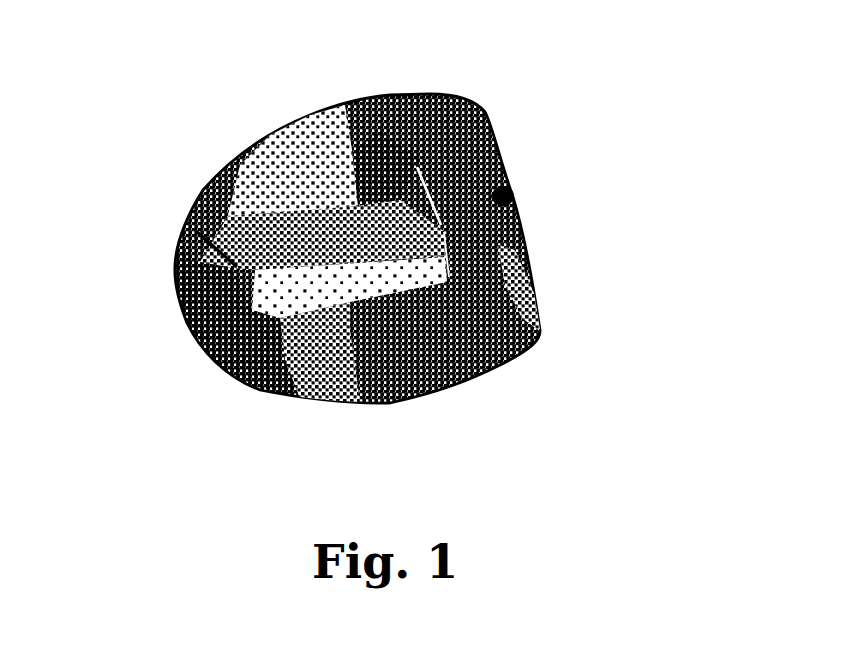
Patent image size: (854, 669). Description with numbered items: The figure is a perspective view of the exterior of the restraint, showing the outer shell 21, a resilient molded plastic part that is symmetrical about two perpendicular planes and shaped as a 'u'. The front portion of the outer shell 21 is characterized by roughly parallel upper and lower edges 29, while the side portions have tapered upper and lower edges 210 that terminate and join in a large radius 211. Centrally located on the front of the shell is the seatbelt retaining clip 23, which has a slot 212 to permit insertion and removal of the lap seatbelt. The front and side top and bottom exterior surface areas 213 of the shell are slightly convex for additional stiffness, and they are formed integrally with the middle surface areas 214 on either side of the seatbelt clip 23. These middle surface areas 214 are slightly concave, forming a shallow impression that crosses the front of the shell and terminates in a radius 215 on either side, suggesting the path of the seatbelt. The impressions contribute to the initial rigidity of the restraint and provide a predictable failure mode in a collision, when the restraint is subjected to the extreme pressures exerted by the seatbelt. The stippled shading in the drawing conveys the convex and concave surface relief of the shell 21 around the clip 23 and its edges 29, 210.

The outer shell 21 is at (487, 112).
The tapered upper and lower edges 210 is at (240, 153).
The front and side top and bottom exterior surface areas 213 is at (306, 157).
The upper and lower edges 29 is at (427, 96).
The seatbelt retaining clip 23 is at (510, 196).
The slot 212 is at (512, 222).
The middle surface areas 214 is at (520, 245).
The radius 215 is at (196, 231).
The large radius 211 is at (178, 283).